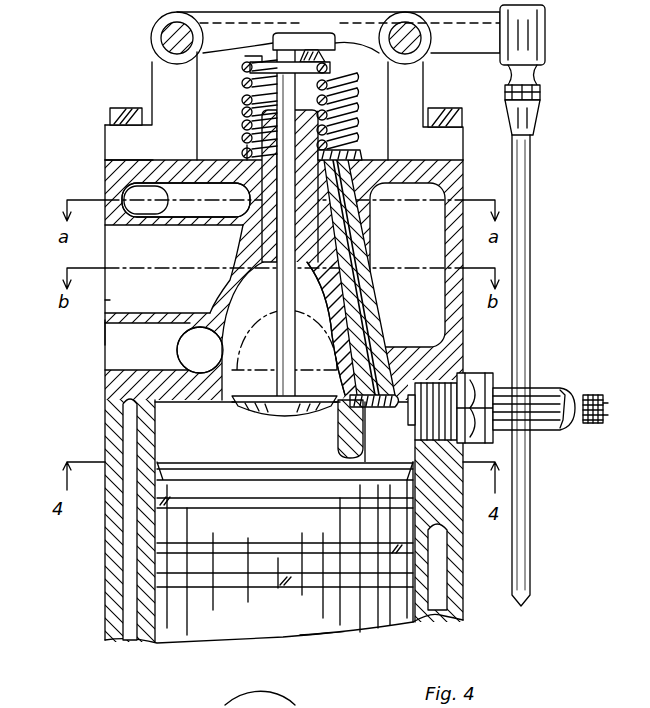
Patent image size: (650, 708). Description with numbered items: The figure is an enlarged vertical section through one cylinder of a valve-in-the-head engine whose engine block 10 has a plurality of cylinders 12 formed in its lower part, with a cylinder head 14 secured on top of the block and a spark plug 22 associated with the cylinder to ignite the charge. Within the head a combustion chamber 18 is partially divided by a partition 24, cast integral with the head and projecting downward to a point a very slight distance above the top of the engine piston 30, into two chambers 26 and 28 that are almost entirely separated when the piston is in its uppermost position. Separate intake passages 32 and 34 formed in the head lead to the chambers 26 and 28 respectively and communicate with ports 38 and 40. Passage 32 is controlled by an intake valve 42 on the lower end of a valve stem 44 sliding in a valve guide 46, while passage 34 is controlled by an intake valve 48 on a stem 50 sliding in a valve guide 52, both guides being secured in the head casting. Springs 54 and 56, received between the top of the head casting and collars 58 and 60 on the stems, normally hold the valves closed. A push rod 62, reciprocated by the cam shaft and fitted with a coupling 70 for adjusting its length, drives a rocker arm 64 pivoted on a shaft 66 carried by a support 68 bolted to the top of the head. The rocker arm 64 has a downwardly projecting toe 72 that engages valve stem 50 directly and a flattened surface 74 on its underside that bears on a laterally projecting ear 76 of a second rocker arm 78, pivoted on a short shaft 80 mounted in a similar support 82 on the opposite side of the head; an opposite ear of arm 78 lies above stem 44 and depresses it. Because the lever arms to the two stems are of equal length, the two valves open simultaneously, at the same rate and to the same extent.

The engine block 10 is at (108, 144).
The cylinder 12 is at (428, 596).
The cylinder head 14 is at (466, 341).
The combustion chamber 18 is at (163, 420).
The spark plug 22 is at (547, 400).
The partition 24 is at (340, 441).
The chamber 26 is at (407, 448).
The chamber 28 is at (162, 448).
The engine piston 30 is at (386, 627).
The intake passage 32 is at (167, 363).
The intake passage 34 is at (170, 240).
The port 38 is at (104, 333).
The port 40 is at (96, 300).
The intake valve 42 is at (378, 407).
The valve stem 44 is at (360, 251).
The valve guide 46 is at (372, 317).
The intake valve 48 is at (280, 410).
The valve stem 50 is at (276, 281).
The valve guide 52 is at (244, 138).
The spring 54 is at (352, 80).
The spring 56 is at (244, 84).
The collar 58 is at (330, 72).
The collar 60 is at (258, 62).
The push rod 62 is at (531, 523).
The rocker arm 64 is at (489, 52).
The shaft 66 is at (422, 38).
The support 68 is at (420, 80).
The coupling 70 is at (536, 114).
The toe 72 is at (276, 32).
The flattened surface 74 is at (325, 33).
The ear 76 is at (322, 45).
The rocker arm 78 is at (218, 42).
The short shaft 80 is at (163, 35).
The support 82 is at (165, 75).